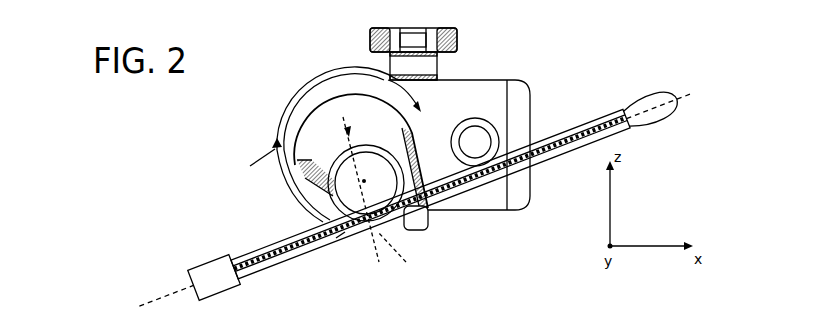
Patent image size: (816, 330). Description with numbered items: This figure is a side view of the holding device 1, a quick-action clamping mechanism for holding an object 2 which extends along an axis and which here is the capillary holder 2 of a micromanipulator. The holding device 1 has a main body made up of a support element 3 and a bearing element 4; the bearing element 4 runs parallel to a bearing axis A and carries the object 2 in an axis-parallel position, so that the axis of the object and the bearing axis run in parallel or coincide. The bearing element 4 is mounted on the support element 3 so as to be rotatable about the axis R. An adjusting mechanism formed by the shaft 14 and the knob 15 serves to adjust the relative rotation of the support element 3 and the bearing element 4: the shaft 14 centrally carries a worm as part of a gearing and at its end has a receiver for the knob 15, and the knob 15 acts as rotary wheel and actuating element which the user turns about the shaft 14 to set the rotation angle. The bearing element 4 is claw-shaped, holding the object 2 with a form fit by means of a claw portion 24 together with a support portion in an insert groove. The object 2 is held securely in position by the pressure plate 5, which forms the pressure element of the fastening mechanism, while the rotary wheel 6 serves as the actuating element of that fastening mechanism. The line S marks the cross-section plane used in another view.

The holding device 1 is at (562, 49).
The object 2 is at (581, 123).
The support element 3 is at (495, 78).
The bearing element 4 is at (305, 190).
The pressure plate 5 is at (363, 199).
The rotary wheel 6 is at (322, 207).
The shaft 14 is at (440, 80).
The knob 15 is at (370, 40).
The claw portion 24 is at (338, 240).